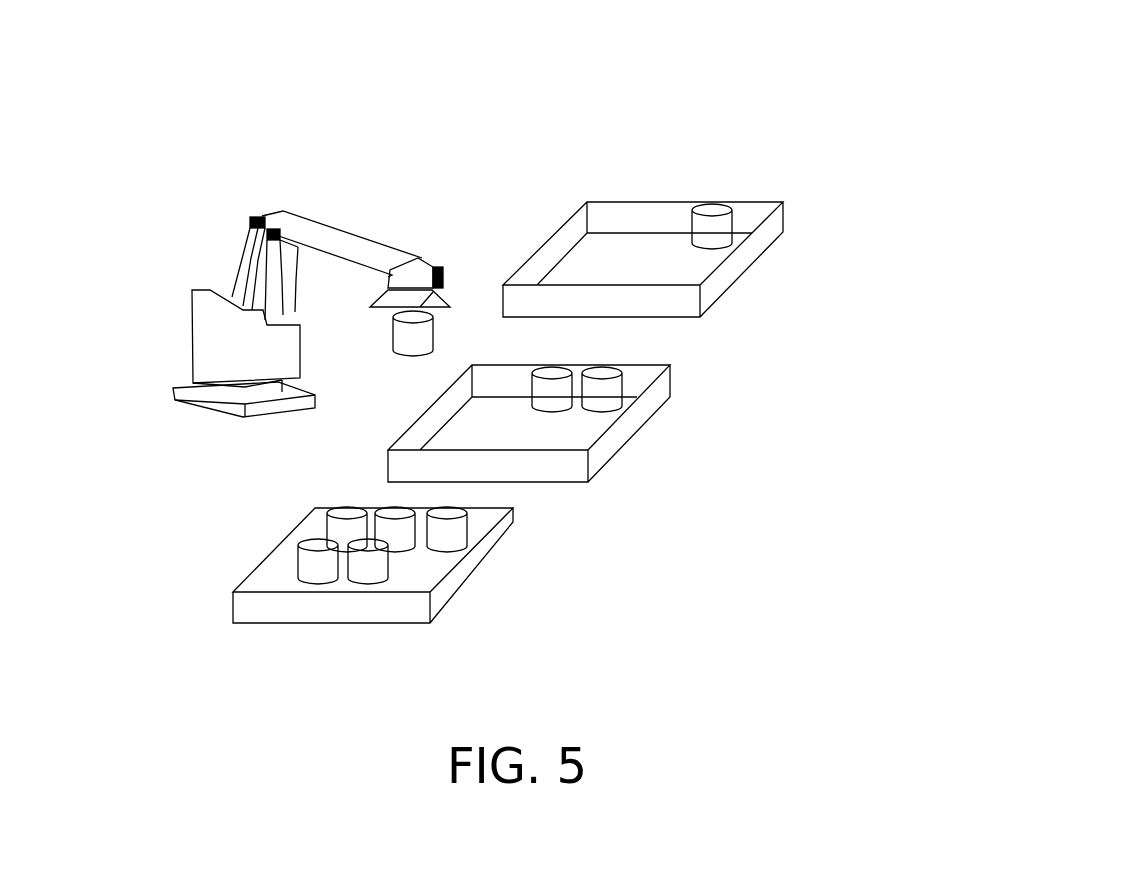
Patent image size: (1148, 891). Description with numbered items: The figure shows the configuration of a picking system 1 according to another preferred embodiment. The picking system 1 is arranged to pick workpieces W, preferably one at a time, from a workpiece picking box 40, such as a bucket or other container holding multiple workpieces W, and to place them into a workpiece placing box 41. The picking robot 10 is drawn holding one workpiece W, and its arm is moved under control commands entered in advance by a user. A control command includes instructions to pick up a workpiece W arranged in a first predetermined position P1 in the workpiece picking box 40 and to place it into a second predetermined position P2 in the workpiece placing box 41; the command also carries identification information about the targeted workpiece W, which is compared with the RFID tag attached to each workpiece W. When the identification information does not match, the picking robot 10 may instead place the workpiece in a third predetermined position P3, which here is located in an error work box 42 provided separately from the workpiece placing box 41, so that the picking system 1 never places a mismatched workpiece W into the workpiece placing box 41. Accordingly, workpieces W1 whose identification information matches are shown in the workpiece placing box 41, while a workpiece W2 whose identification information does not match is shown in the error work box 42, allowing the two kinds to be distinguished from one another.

The picking system 1 is at (748, 113).
The picking robot 10 is at (380, 184).
The workpiece picking box 40 is at (503, 535).
The workpiece placing box 41 is at (662, 390).
The error work box 42 is at (777, 228).
The workpiece W is at (400, 334).
The workpiece whose identification information matches W1 is at (555, 370).
The workpiece whose identification information does not match W2 is at (715, 208).
The first predetermined position P1 is at (293, 563).
The second predetermined position P2 is at (577, 431).
The third predetermined position P3 is at (652, 215).